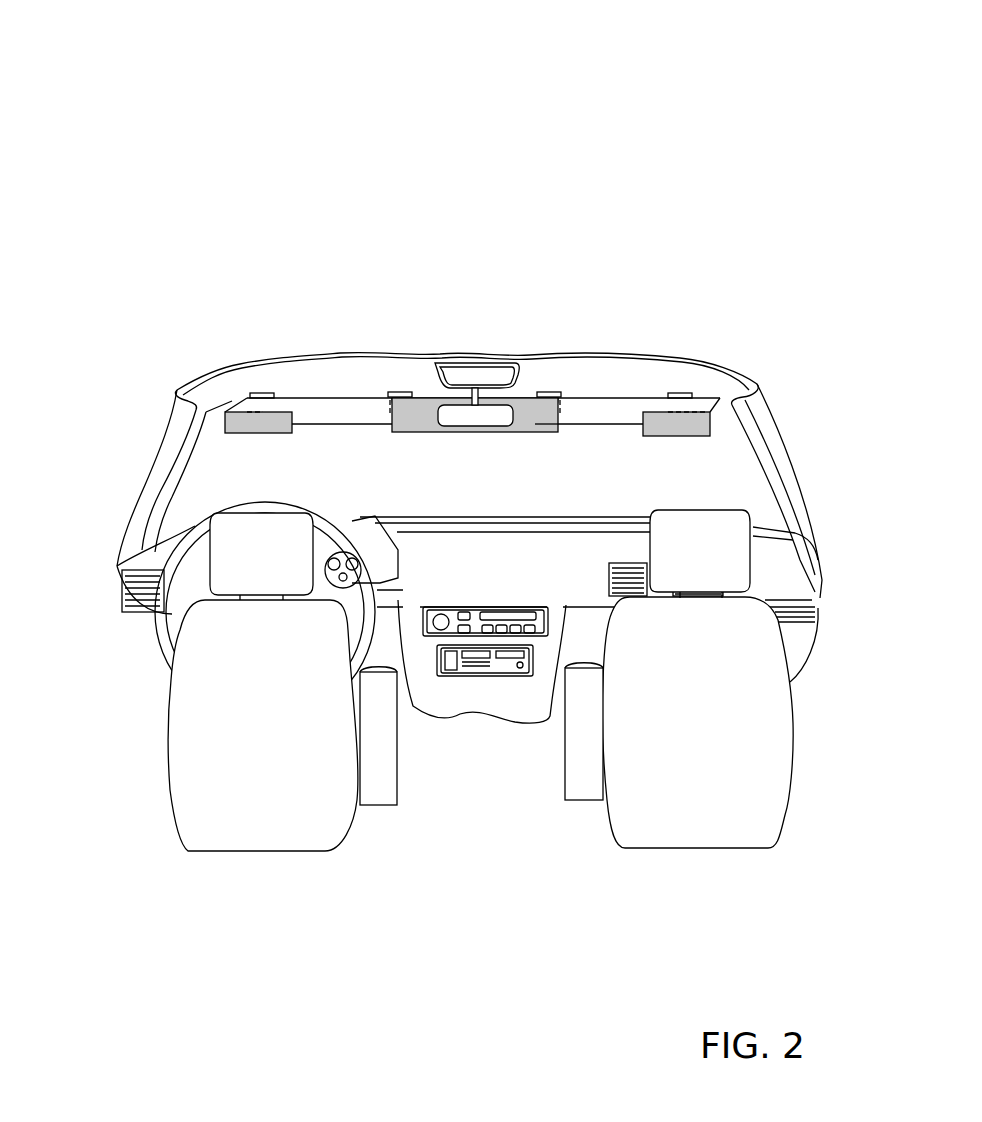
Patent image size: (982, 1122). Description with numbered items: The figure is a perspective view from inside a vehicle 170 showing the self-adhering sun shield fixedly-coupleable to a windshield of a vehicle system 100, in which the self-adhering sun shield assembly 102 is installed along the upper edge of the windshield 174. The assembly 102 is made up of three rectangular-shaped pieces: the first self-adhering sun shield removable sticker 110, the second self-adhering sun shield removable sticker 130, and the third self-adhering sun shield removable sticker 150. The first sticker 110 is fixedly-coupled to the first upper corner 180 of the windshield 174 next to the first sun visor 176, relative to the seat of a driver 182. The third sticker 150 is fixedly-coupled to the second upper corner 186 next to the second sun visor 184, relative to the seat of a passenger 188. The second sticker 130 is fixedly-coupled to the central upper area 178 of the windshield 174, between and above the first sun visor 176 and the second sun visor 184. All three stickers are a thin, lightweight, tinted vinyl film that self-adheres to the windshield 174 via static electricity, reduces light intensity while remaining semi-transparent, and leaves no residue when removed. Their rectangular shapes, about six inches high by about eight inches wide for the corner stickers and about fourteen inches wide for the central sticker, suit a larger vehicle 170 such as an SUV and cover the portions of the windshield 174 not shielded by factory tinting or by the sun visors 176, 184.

The self-adhering sun shield fixedly-coupleable to a windshield of a vehicle system 100 is at (670, 66).
The self-adhering sun shield assembly 102 is at (684, 104).
The first self-adhering sun shield removable sticker 110 is at (232, 414).
The second self-adhering sun shield removable sticker 130 is at (453, 400).
The third self-adhering sun shield removable sticker 150 is at (703, 405).
The vehicle 170 is at (766, 428).
The windshield 174 is at (722, 478).
The first sun visor 176 is at (352, 410).
The central upper area 178 is at (438, 390).
The first upper corner 180 is at (287, 410).
The seat of a driver 182 is at (166, 686).
The second sun visor 184 is at (584, 406).
The second upper corner 186 is at (654, 405).
The seat of a passenger 188 is at (763, 594).